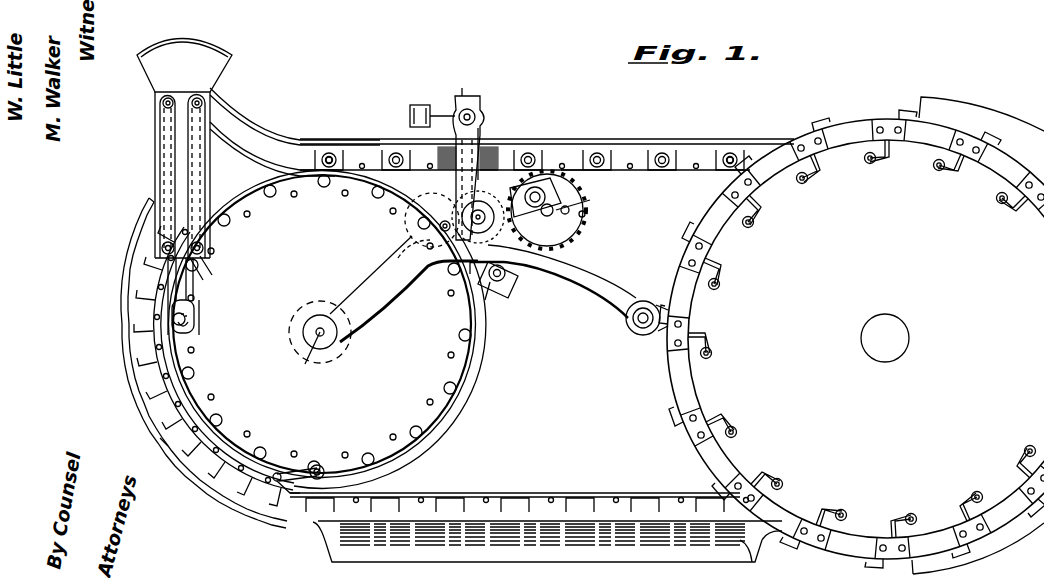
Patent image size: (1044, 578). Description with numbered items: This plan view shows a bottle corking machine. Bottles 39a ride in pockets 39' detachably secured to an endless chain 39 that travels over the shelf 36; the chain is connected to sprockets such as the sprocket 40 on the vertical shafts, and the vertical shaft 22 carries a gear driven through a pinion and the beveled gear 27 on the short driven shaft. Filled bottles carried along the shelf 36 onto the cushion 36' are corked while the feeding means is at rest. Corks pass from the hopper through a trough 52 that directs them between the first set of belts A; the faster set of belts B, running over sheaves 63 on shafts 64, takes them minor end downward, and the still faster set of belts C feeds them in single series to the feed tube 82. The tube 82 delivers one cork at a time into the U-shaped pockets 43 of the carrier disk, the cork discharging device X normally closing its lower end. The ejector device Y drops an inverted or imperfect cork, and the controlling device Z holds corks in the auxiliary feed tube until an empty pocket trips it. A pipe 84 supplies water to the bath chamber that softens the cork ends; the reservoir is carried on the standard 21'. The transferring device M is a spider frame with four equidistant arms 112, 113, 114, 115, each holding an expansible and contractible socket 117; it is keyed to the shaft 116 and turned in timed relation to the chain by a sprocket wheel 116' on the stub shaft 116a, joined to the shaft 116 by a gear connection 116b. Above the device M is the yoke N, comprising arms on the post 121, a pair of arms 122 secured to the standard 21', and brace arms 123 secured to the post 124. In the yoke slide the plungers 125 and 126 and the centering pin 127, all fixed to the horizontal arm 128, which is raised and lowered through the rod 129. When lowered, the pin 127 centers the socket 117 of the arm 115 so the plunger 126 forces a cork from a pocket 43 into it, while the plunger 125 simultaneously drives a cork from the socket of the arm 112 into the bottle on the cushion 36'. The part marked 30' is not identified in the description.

The first set of belts A is at (176, 138).
The trough 52 is at (155, 168).
The set of belts B is at (180, 212).
The shafts 64 is at (170, 246).
The sheaves 63 is at (192, 262).
The set of belts C is at (155, 268).
The cork discharging device X is at (172, 322).
The feed tube 82 is at (194, 328).
The cork receiving pockets 43 is at (192, 383).
The standard 21' is at (320, 348).
The ejector device Y is at (168, 446).
The controlling device Z is at (292, 495).
The pipe 84 is at (377, 472).
The sprocket 40 is at (476, 357).
The pair of arms 122 is at (404, 289).
The brace arms 123 is at (553, 281).
The yoke N is at (525, 292).
The post 124 is at (646, 306).
The arm 114 is at (508, 290).
The expansible and contractible socket 117 is at (485, 285).
The shaft 116 is at (454, 252).
The arm 115 is at (406, 234).
The plunger 126 is at (392, 257).
The gear connection 116b is at (500, 220).
The arm 113 is at (548, 180).
The transferring device M is at (555, 176).
The stub shaft 116a is at (598, 194).
The sprocket wheel 116' is at (608, 225).
The centering pin 127 is at (447, 222).
The horizontal arm 128 is at (462, 79).
The rod 129 is at (420, 106).
The post 121 is at (462, 115).
The plunger 125 is at (448, 156).
The arm 112 is at (492, 150).
The cushion 36' is at (520, 132).
The shelf 36 is at (547, 140).
The pockets 39' is at (529, 139).
The bottles 39a is at (745, 122).
The endless chain 39 is at (519, 342).
The beveled gear 27 is at (508, 522).
The trough end 30' is at (715, 539).
The vertical shaft 22 is at (863, 330).